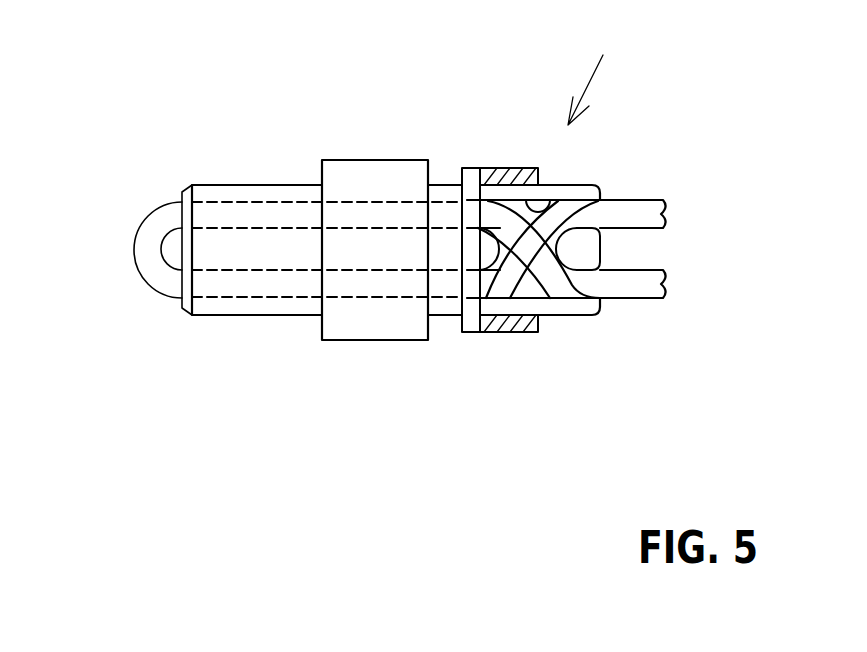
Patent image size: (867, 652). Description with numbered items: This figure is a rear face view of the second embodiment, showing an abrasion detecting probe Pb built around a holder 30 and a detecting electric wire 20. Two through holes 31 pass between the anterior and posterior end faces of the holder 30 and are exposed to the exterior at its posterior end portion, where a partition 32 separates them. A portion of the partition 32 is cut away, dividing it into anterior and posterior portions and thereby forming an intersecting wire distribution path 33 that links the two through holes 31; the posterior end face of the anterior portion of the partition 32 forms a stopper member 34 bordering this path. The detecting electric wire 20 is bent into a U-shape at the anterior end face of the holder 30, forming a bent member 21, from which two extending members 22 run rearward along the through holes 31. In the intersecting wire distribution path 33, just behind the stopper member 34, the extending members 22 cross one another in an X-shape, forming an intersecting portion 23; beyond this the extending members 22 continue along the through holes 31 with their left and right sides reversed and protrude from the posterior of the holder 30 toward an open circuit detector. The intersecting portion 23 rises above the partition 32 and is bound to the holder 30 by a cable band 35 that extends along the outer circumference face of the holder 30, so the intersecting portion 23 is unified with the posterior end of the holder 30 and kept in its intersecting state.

The detecting electric wire 20 is at (667, 157).
The bent member 21 is at (147, 252).
The extending members 22 is at (347, 220).
The intersecting portion 23 is at (540, 256).
The holder 30 is at (233, 185).
The through holes 31 is at (300, 235).
The partition 32 is at (257, 255).
The intersecting wire distribution path 33 is at (553, 196).
The stopper member 34 is at (485, 253).
The cable band 35 is at (493, 168).
The lead Pb is at (622, 43).